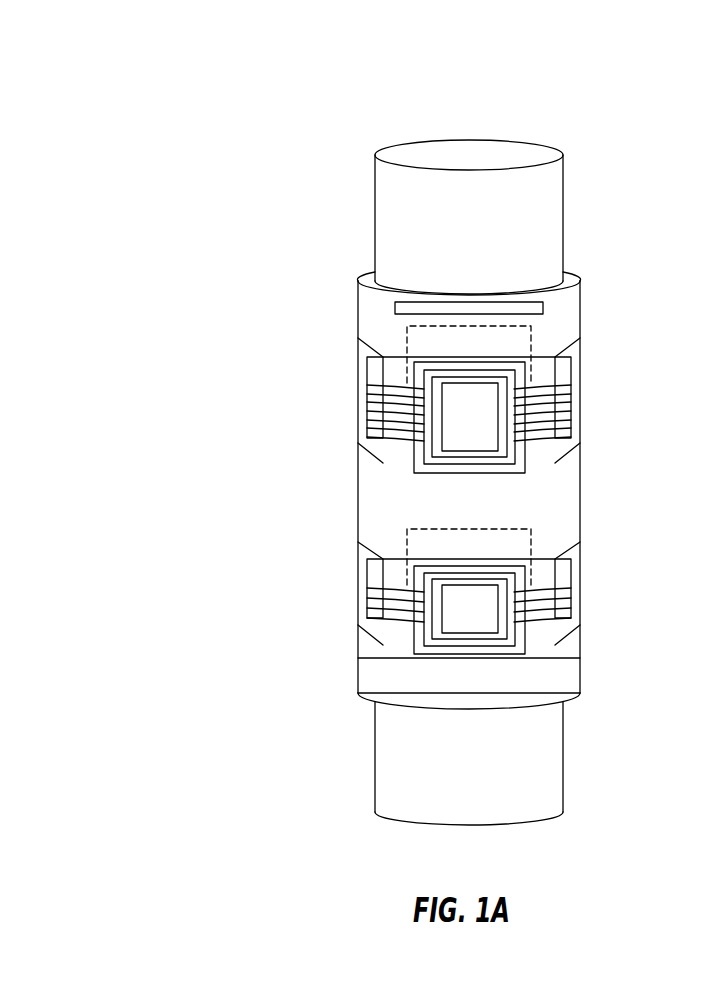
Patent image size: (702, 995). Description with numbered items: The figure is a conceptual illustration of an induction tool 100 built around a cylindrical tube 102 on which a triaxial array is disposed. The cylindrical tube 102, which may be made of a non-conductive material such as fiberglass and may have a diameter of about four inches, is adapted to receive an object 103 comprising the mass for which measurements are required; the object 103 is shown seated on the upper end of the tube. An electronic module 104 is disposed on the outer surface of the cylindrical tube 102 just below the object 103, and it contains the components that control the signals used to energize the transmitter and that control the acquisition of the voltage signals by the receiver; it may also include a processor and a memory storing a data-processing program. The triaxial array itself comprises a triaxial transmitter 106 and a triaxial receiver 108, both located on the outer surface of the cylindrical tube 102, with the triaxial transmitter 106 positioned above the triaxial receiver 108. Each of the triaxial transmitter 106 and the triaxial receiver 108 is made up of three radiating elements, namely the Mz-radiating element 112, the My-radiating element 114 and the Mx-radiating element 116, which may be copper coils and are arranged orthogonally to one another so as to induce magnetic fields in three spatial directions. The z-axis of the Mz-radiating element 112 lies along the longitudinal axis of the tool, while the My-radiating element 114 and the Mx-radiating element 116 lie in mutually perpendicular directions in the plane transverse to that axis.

The induction tool 100 is at (296, 683).
The cylindrical tube 102 is at (542, 677).
The object 103 is at (485, 237).
The electronic module 104 is at (407, 310).
The triaxial transmitter 106 is at (556, 338).
The triaxial receiver 108 is at (557, 541).
The Mz-radiating element 112 is at (398, 388).
The My-radiating element 114 is at (467, 407).
The Mx-radiating element 116 is at (383, 408).